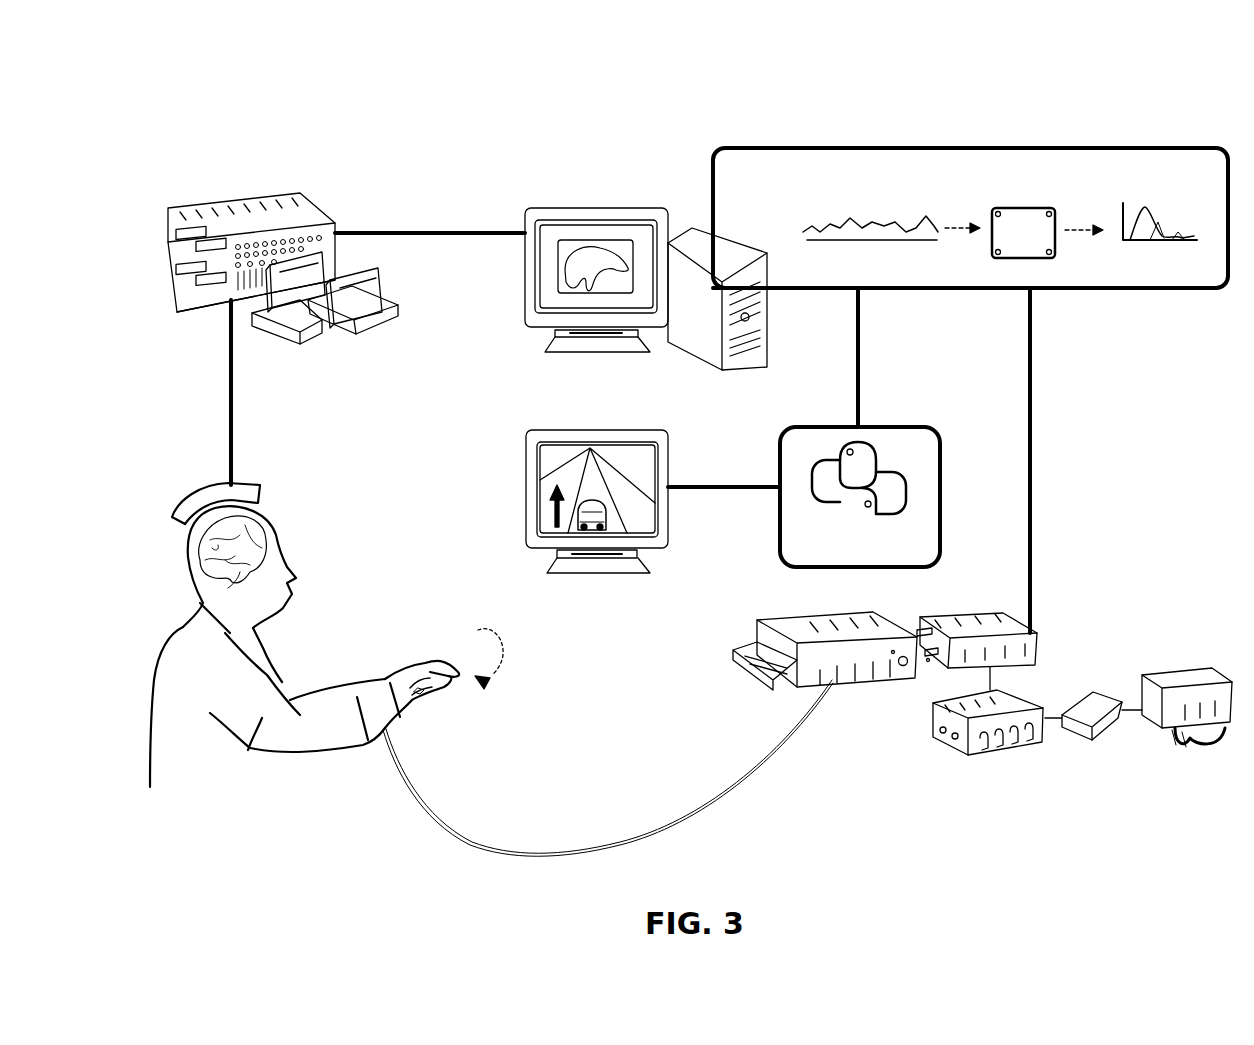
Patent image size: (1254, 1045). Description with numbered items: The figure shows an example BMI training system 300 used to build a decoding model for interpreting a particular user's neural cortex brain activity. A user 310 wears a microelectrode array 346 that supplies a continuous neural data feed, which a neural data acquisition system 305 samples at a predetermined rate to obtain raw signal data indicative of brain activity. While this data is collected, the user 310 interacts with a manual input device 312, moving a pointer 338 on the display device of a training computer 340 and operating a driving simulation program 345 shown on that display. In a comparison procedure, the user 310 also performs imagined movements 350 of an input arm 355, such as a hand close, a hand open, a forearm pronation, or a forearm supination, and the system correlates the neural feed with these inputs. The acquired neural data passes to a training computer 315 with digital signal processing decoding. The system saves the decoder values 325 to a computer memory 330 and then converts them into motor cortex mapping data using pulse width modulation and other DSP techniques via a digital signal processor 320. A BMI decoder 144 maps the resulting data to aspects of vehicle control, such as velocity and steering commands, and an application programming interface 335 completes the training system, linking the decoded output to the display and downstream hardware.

The BMI training system 300 is at (203, 103).
The neural data acquisition system 305 is at (315, 205).
The user 310 is at (273, 521).
The manual input device 312 is at (387, 730).
The training computer 315 is at (598, 207).
The digital signal processor 320 is at (802, 150).
The decoder values 325 is at (880, 168).
The computer memory 330 is at (1018, 168).
The BMI decoder 144 is at (1175, 168).
The application programming interface 335 is at (906, 427).
The training computer 340 is at (670, 452).
The driving simulation program 345 is at (617, 463).
The pointer 338 is at (547, 515).
The microelectrode array 346 is at (248, 483).
The imagined movements 350 is at (500, 683).
The input arm 355 is at (290, 697).